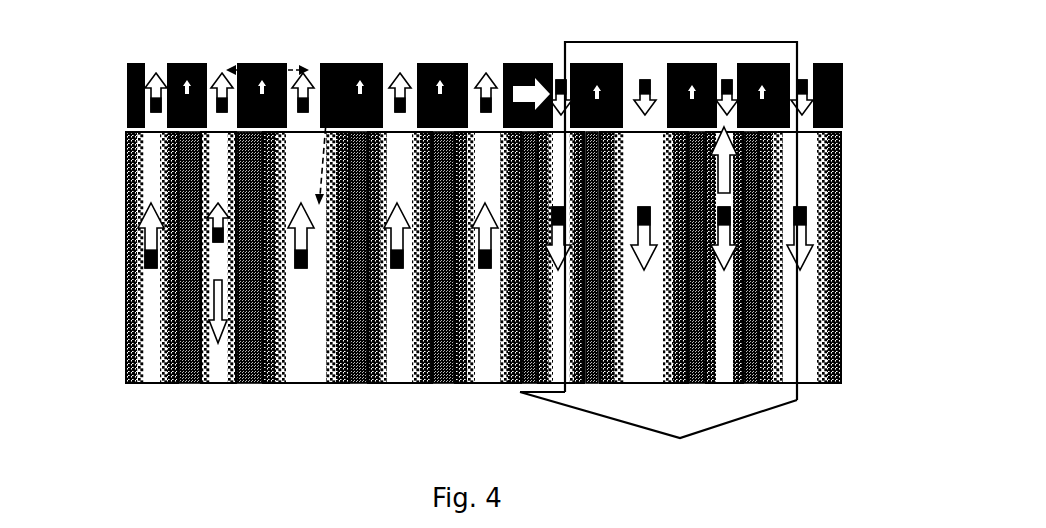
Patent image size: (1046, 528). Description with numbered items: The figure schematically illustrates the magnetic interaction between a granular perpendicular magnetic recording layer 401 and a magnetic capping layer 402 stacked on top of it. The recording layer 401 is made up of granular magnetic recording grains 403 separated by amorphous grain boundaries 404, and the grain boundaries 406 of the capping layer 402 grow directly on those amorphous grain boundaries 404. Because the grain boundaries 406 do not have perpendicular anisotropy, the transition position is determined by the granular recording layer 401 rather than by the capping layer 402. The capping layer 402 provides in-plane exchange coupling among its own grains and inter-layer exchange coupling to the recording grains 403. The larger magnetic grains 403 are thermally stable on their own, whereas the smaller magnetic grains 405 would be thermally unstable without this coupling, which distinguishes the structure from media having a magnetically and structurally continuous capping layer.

The granular perpendicular magnetic recording layer 401 is at (118, 140).
The magnetic capping layer 402 is at (115, 63).
The granular magnetic recording grains 403 is at (313, 330).
The amorphous grain boundaries 404 is at (245, 372).
The smaller magnetic grains 405 is at (206, 397).
The grain boundaries 406 is at (524, 72).